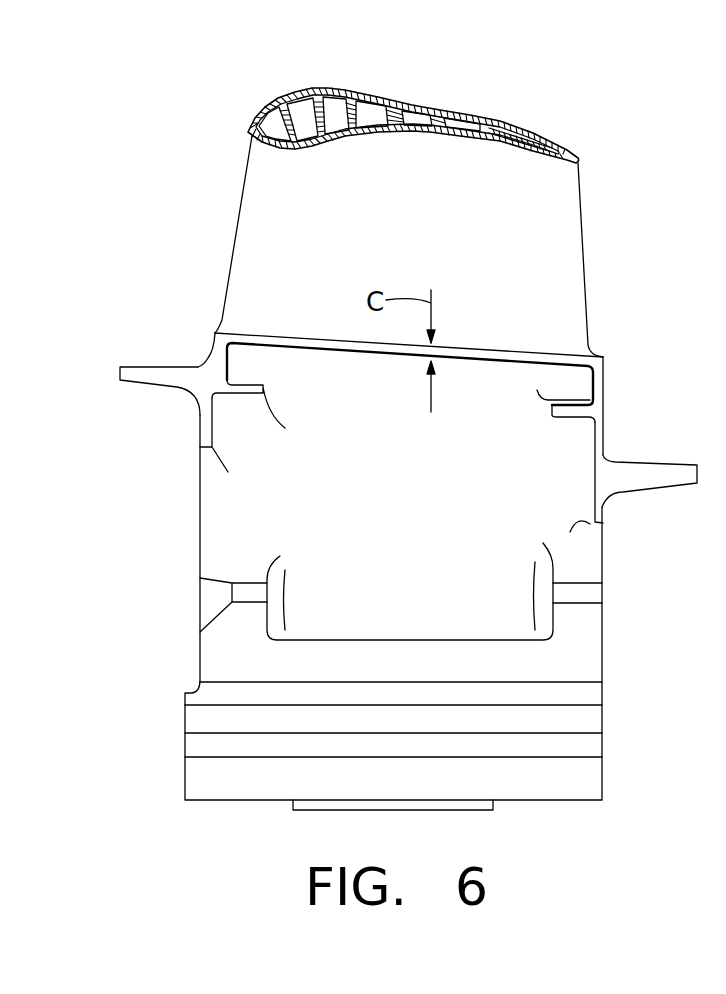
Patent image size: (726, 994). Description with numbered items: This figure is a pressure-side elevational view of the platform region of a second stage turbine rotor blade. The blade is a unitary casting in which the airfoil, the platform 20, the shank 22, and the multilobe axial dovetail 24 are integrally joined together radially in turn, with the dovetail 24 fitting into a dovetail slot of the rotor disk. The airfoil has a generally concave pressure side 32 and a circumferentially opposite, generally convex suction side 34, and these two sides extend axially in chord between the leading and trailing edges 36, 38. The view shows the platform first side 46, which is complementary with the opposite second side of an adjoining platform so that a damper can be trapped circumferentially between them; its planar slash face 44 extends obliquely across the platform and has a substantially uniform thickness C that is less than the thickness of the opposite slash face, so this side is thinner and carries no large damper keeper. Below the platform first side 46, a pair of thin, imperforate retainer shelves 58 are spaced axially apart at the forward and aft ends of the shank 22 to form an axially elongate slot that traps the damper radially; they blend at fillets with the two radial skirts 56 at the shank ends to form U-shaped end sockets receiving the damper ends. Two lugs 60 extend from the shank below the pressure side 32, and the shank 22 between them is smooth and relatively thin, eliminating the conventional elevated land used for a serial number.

The platform 20 is at (212, 326).
The shank 22 is at (430, 509).
The multilobe axial dovetail 24 is at (603, 711).
The pressure side 32 is at (413, 246).
The suction side 34 is at (398, 102).
The leading edge 36 is at (256, 207).
The trailing edge 38 is at (582, 212).
The slash face 44 is at (370, 349).
The platform first side 46 is at (337, 338).
The skirt 56 is at (197, 404).
The retainer shelf 58 is at (236, 400).
The lug 60 is at (273, 595).